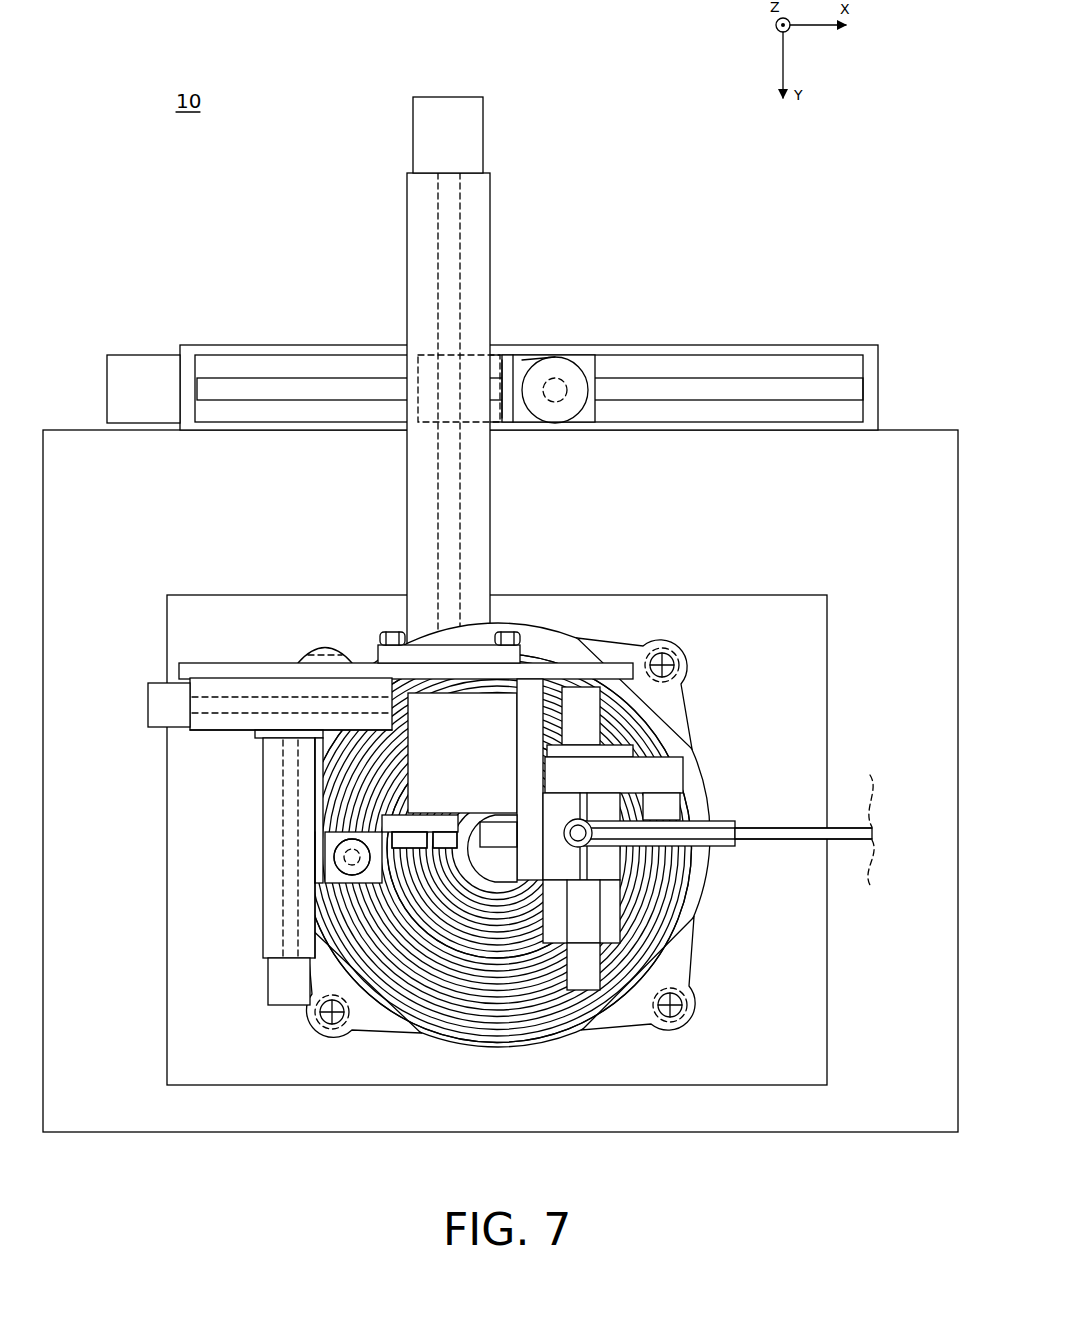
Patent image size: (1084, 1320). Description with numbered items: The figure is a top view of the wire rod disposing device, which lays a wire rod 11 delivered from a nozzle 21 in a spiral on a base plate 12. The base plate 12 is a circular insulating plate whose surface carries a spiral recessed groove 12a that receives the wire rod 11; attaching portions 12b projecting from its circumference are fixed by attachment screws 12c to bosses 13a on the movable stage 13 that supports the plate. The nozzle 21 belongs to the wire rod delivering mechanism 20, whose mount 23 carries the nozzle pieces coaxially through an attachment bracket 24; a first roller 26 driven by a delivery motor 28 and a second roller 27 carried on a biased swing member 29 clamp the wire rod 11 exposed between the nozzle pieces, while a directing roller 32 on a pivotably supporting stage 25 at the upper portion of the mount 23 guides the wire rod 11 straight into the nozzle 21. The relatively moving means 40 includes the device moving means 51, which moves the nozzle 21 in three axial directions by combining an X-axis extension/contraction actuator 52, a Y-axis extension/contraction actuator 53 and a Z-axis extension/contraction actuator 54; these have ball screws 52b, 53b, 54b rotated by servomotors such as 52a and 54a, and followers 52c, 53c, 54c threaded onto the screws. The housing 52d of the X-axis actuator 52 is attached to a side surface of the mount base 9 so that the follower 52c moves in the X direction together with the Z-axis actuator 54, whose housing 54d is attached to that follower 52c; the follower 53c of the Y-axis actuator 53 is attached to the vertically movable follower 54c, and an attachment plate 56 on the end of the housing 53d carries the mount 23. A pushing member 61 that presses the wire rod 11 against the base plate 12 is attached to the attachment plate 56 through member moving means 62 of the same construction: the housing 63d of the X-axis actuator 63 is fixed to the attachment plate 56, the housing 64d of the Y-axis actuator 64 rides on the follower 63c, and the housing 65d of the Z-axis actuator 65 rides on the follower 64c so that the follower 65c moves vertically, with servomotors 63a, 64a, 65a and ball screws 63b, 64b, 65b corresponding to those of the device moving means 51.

The mount base 9 is at (845, 1115).
The wire rod 11 is at (843, 830).
The base plate 12 is at (714, 789).
The recessed groove 12a is at (681, 907).
The attaching portions 12b is at (690, 662).
The attachment screw 12c is at (660, 650).
The movable stage 13 is at (765, 606).
The bosses 13a is at (682, 645).
The wire rod delivering mechanism 20 is at (651, 753).
The nozzle 21 is at (579, 819).
The mount 23 is at (516, 737).
The attachment bracket 24 is at (608, 863).
The pivotably supporting stage 25 is at (675, 770).
The first roller 26 is at (581, 689).
The second roller 27 is at (586, 975).
The delivery motor 28 is at (420, 690).
The swing member 29 is at (630, 930).
The directing roller 32 is at (718, 823).
The relatively moving means 40 is at (581, 238).
The device moving means 51 is at (523, 262).
The X-axis direction extension/contraction actuator 52 is at (378, 276).
The servomotor 52a is at (205, 348).
The ball screw 52b is at (268, 378).
The follower 52c is at (500, 347).
The housing 52d is at (312, 355).
The Y-axis direction extension/contraction actuator 53 is at (405, 233).
The ball screw 53b is at (460, 217).
The follower 53c is at (481, 126).
The housing 53d is at (408, 478).
The Z-axis direction extension/contraction actuator 54 is at (693, 207).
The servomotor 54a is at (582, 368).
The ball screw 54b is at (561, 379).
The follower 54c is at (508, 380).
The housing 54d is at (541, 362).
The attachment plate 56 is at (556, 672).
The pushing member 61 is at (455, 905).
The member moving means 62 is at (238, 796).
The X-axis direction extension/contraction actuator 63 is at (100, 706).
The arm end block 63a is at (150, 708).
The arm shaft 63b is at (215, 718).
The follower 63c is at (262, 736).
The housing 63d is at (232, 735).
The Y-axis direction extension/contraction actuator 64 is at (114, 890).
The arm end block 64a is at (272, 978).
The arm shaft 64b is at (284, 862).
The follower 64c is at (300, 895).
The housing 64d is at (313, 925).
The Z-axis direction extension/contraction actuator 65 is at (462, 1186).
The motor 65a is at (352, 886).
The coupling 65b is at (445, 850).
The follower 65c is at (425, 850).
The housing 65d is at (322, 960).